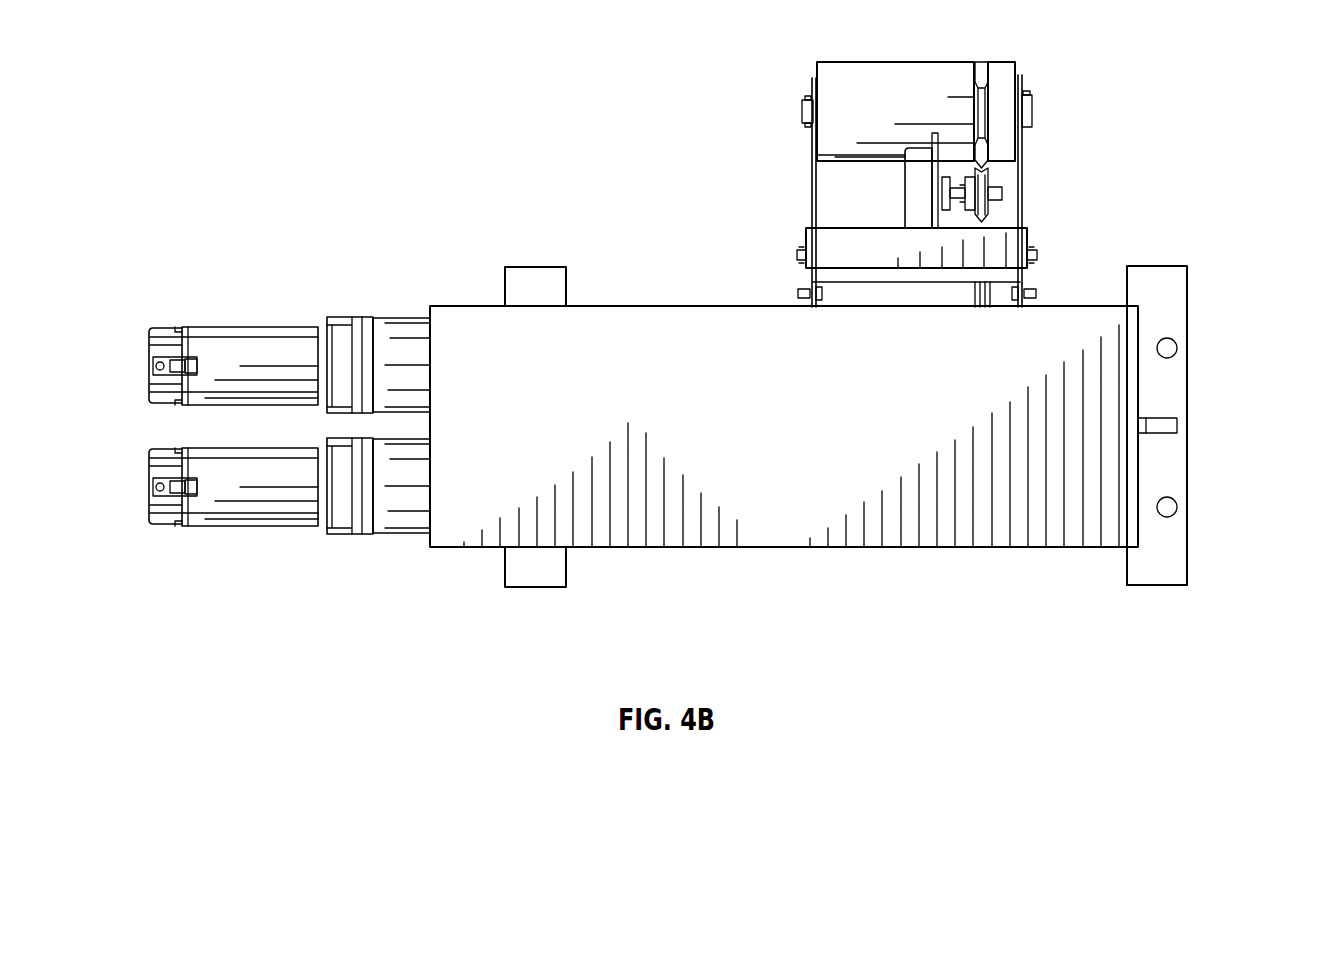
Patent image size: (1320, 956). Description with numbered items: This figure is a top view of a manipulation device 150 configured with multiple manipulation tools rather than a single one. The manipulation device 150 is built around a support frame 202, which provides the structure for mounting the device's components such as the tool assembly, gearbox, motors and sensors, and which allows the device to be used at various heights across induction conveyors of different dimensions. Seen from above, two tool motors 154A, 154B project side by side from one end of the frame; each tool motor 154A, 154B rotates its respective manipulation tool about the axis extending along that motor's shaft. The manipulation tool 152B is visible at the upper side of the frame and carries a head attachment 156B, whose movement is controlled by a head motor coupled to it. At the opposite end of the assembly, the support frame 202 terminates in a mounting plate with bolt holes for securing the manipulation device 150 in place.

The manipulation device 150 is at (368, 122).
The manipulation tool 152B is at (982, 158).
The head attachment 156B is at (905, 77).
The tool motor 154A is at (245, 497).
The tool motor 154B is at (272, 326).
The support frame 202 is at (1172, 560).